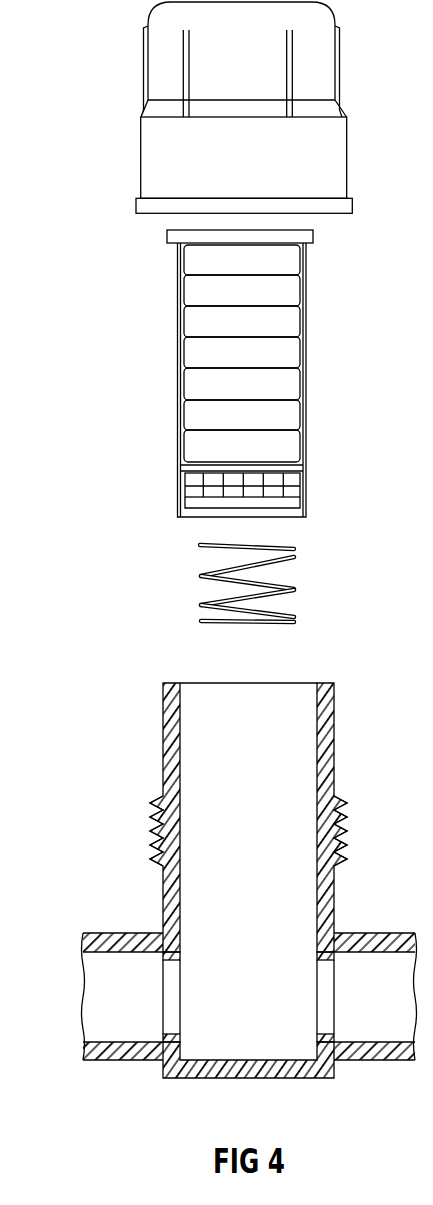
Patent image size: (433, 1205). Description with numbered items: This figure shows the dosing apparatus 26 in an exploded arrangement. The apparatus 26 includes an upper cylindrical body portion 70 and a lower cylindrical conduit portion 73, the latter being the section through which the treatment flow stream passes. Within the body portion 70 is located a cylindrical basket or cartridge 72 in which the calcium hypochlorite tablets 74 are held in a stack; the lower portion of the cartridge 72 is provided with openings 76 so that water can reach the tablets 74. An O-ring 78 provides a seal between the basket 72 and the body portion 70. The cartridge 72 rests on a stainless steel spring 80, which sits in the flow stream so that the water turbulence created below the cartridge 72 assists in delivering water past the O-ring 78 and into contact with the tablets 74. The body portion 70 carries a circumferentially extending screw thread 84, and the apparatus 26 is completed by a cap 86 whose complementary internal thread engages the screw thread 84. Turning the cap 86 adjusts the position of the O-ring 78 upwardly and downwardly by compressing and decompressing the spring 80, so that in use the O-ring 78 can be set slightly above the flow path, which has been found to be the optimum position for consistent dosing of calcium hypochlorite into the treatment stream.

The apparatus 26 is at (140, 342).
The upper cylindrical body portion 70 is at (303, 403).
The cylindrical basket or cartridge 72 is at (275, 477).
The lower cylindrical conduit portion 73 is at (70, 985).
The calcium hypochlorite tablets 74 is at (267, 322).
The openings 76 is at (253, 488).
The O-ring 78 is at (425, 532).
The stainless steel spring 80 is at (198, 575).
The screw thread 84 is at (343, 830).
The cap 86 is at (326, 162).